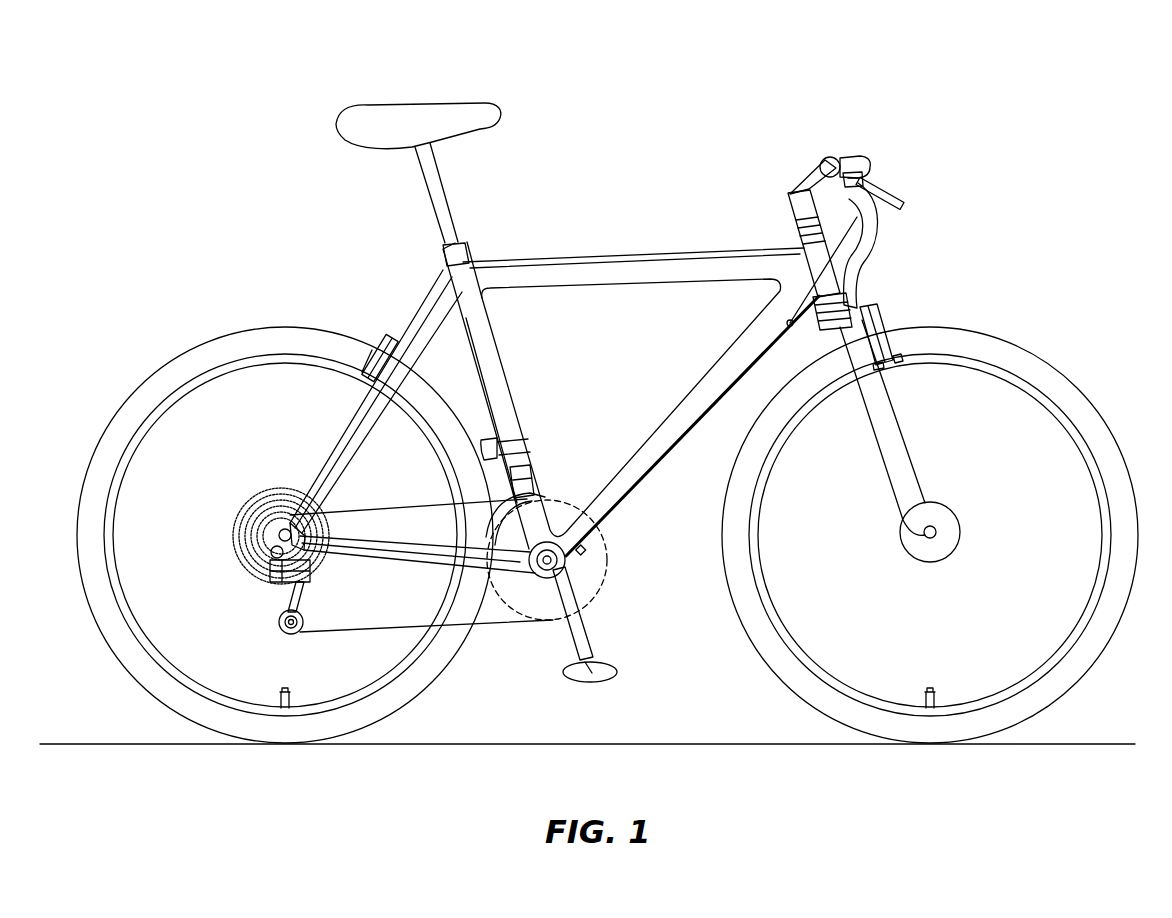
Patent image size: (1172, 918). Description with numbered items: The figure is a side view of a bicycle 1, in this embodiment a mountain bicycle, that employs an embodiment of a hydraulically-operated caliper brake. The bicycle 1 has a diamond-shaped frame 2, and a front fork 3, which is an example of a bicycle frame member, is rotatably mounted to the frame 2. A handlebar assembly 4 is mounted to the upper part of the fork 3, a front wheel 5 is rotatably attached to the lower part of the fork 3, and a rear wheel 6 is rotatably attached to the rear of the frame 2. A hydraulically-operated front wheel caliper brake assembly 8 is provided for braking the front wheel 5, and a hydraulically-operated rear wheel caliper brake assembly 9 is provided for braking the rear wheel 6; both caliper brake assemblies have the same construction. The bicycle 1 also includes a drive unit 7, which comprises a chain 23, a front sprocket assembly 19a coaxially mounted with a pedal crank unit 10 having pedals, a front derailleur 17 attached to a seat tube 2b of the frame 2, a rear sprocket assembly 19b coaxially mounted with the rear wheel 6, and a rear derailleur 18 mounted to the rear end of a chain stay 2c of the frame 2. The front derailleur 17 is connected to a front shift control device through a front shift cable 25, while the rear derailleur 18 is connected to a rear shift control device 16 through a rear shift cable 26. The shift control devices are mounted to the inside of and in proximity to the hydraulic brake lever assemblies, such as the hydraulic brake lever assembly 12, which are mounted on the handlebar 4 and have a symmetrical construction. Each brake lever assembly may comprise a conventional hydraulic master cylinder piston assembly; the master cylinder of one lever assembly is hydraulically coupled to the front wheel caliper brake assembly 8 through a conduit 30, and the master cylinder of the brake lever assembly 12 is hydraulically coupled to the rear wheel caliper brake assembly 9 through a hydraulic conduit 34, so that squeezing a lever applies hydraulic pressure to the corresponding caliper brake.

The bicycle 1 is at (682, 218).
The frame 2 is at (571, 353).
The seat tube 2b is at (520, 395).
The chain stay 2c is at (397, 545).
The front fork 3 is at (873, 404).
The handlebar assembly 4 is at (855, 162).
The front wheel 5 is at (1072, 366).
The rear wheel 6 is at (197, 342).
The drive unit 7 is at (581, 642).
The front wheel caliper brake assembly 8 is at (877, 320).
The rear wheel caliper brake assembly 9 is at (397, 345).
The pedal crank unit 10 is at (588, 643).
The hydraulic brake lever assembly 12 is at (870, 186).
The rear shift control device 16 is at (858, 170).
The front derailleur 17 is at (527, 470).
The rear derailleur 18 is at (280, 596).
The front sprocket assembly 19a is at (600, 593).
The rear sprocket assembly 19b is at (240, 550).
The chain 23 is at (380, 628).
The front shift cable 25 is at (481, 370).
The rear shift cable 26 is at (656, 465).
The conduit 30 is at (880, 232).
The hydraulic conduit 34 is at (490, 262).